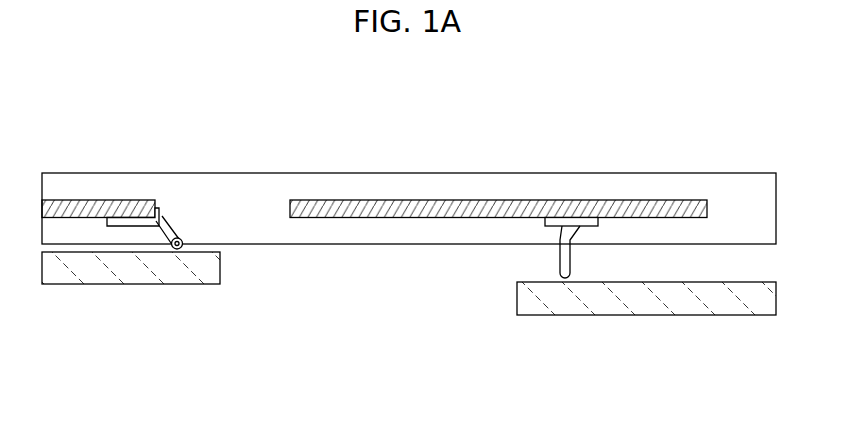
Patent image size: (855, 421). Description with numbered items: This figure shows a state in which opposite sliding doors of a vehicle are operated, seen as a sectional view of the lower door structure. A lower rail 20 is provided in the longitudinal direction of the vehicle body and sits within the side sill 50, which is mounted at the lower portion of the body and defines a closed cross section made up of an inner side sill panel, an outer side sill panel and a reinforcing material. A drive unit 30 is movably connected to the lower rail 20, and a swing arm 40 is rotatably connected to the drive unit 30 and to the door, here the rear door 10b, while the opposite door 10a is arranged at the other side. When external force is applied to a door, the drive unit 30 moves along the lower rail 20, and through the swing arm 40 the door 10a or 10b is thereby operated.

The side sill 50 is at (627, 183).
The lower rail 20 is at (383, 208).
The drive unit 30 is at (562, 223).
The swing arm 40 is at (560, 262).
The door 10a is at (157, 277).
The rear door 10b is at (617, 308).